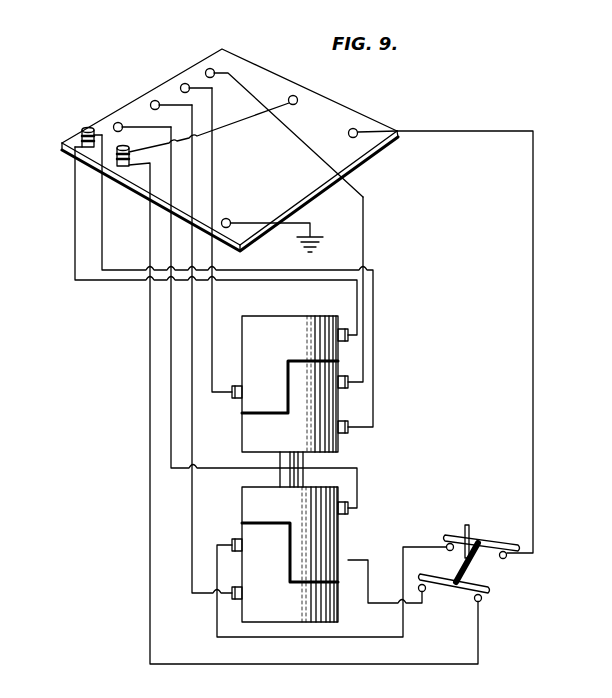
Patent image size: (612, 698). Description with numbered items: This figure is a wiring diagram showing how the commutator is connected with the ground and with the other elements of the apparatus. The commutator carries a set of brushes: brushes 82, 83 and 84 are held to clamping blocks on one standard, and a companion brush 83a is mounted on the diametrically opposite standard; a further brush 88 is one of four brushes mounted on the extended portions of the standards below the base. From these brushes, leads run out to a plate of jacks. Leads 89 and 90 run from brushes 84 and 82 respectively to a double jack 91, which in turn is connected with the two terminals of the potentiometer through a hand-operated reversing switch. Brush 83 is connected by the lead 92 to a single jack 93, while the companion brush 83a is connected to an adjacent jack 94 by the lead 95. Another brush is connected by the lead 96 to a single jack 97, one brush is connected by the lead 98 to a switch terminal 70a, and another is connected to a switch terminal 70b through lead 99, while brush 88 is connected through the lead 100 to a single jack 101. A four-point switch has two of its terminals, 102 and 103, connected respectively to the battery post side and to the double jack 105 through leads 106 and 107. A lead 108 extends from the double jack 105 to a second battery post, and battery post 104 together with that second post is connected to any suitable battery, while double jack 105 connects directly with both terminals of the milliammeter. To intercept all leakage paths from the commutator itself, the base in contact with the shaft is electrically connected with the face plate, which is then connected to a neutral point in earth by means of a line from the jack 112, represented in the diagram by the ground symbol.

The switch terminal 70a is at (447, 545).
The switch terminal 70b is at (424, 592).
The brush 82 is at (347, 434).
The brush 83 is at (343, 388).
The companion brush 83a is at (235, 398).
The brush 84 is at (342, 328).
The brush 88 is at (349, 511).
The lead 89 is at (75, 222).
The lead 90 is at (103, 220).
The double jack 91 is at (87, 128).
The lead 92 is at (364, 232).
The single jack 93 is at (209, 68).
The jack 94 is at (185, 83).
The lead 95 is at (213, 297).
The lead 96 is at (193, 448).
The single jack 97 is at (155, 100).
The lead 98 is at (280, 638).
The lead 99 is at (365, 560).
The lead 100 is at (171, 353).
The single jack 101 is at (118, 122).
The switch terminal 102 is at (507, 558).
The switch terminal 103 is at (483, 598).
The battery post 104 is at (349, 132).
The double jack 105 is at (122, 168).
The lead 106 is at (532, 333).
The lead 107 is at (150, 430).
The lead 108 is at (276, 108).
The jack 112 is at (228, 220).